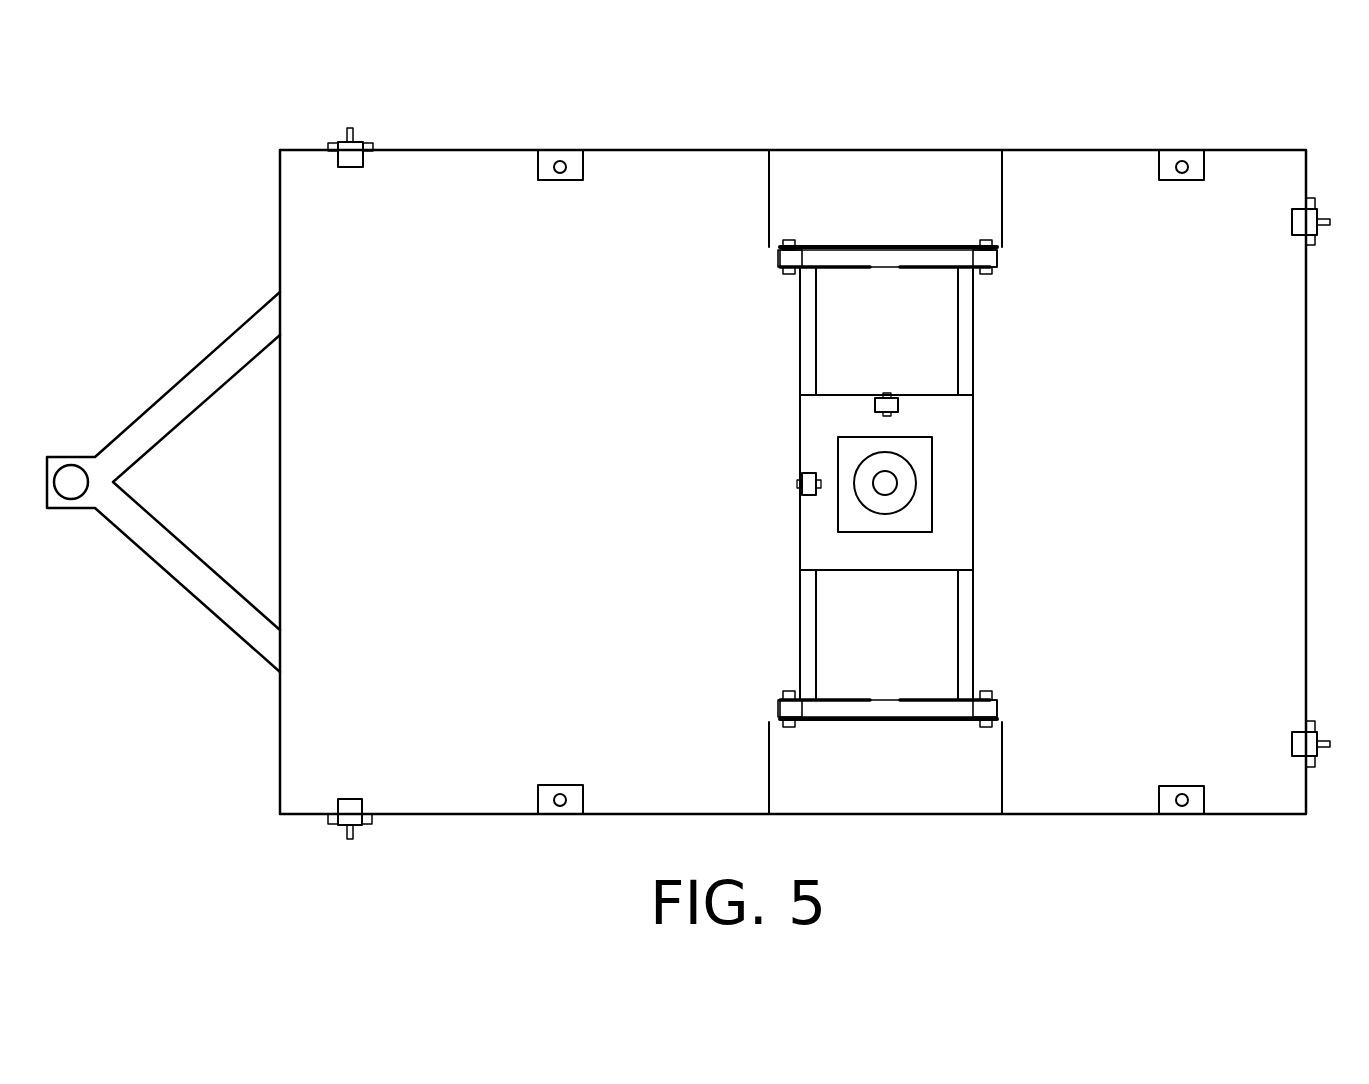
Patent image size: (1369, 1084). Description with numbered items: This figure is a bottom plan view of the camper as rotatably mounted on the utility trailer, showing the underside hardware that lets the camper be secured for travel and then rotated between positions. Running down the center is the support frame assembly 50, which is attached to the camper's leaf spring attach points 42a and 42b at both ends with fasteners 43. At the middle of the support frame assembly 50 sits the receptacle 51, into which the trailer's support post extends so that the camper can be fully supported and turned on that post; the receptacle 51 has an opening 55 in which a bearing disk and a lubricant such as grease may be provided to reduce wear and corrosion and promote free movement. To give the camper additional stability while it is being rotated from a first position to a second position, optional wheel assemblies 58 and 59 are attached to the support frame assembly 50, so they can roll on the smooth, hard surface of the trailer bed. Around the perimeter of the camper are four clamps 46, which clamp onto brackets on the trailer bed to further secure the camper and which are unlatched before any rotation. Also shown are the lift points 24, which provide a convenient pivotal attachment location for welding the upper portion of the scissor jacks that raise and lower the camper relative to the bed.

The lift points 24 is at (583, 165).
The clamps 46 is at (349, 128).
The leaf spring attach point 42a is at (780, 247).
The leaf spring attach point 42b is at (1003, 247).
The fasteners 43 is at (789, 276).
The support frame assembly 50 is at (973, 560).
The receptacle 51 is at (878, 478).
The opening 55 is at (888, 480).
The wheel assembly 58 is at (875, 405).
The wheel assembly 59 is at (805, 497).